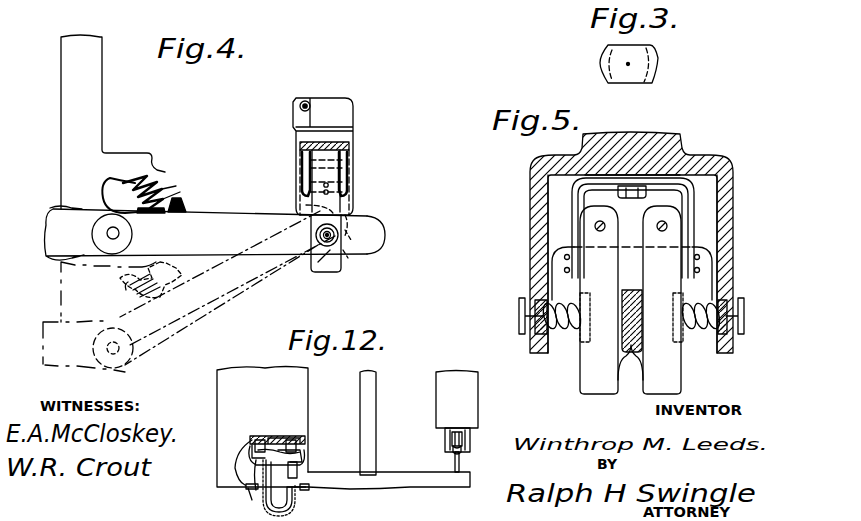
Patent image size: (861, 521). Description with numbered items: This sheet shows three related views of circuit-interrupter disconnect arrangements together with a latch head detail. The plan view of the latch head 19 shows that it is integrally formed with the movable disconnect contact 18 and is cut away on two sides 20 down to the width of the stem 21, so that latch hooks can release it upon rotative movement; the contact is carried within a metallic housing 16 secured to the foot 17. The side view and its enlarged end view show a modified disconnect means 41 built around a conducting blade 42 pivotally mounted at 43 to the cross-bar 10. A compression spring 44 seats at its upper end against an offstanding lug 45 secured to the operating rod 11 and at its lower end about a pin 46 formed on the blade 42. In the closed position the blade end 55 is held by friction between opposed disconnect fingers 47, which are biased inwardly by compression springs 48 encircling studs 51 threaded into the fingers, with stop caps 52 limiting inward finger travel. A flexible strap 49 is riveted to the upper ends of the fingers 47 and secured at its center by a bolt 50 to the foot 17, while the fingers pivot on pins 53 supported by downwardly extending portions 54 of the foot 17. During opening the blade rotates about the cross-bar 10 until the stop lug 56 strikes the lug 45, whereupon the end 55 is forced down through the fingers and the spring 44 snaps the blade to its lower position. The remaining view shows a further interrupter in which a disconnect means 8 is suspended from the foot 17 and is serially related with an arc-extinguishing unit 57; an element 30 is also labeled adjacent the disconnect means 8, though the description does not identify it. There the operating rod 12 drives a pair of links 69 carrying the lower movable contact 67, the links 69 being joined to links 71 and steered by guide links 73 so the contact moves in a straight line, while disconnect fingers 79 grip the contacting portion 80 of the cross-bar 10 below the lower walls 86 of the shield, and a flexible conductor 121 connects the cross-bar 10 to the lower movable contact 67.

In FIG. 12, the disconnect means 8 is at (467, 400).
In FIG. 4, the cross-bar 10 is at (52, 214).
In FIG. 12, the cross-bar 10 is at (345, 489).
In FIG. 4, the operating rod 11 is at (103, 86).
In FIG. 12, the operating rod 11 is at (376, 425).
In FIG. 12, the operating rod 12 is at (294, 440).
In FIG. 12, the metallic housing 16 is at (436, 422).
In FIG. 5, the foot 17 is at (682, 145).
In FIG. 3, the movable disconnect contact 18 is at (610, 64).
In FIG. 12, the movable disconnect contact 18 is at (452, 464).
In FIG. 3, the latch head 19 is at (659, 68).
In FIG. 12, the latch head 19 is at (446, 447).
In FIG. 3, the cut-away sides 20 is at (648, 45).
In FIG. 3, the stem 21 is at (641, 86).
In FIG. 12, the contact holder 30 is at (470, 440).
In FIG. 4, the disconnect means 41 is at (340, 156).
In FIG. 5, the disconnect means 41 is at (604, 273).
In FIG. 4, the conducting blade 42 is at (240, 216).
In FIG. 4, the pivot 43 is at (119, 233).
In FIG. 4, the compression spring 44 is at (158, 186).
In FIG. 4, the offstanding lug 45 is at (150, 150).
In FIG. 4, the pin 46 is at (180, 186).
In FIG. 4, the disconnect fingers 47 is at (325, 270).
In FIG. 5, the disconnect fingers 47 is at (580, 368).
In FIG. 4, the compression springs 48 is at (315, 244).
In FIG. 5, the compression springs 48 is at (563, 340).
In FIG. 4, the flexible strap 49 is at (312, 193).
In FIG. 5, the flexible strap 49 is at (690, 198).
In FIG. 5, the bolt 50 is at (630, 198).
In FIG. 4, the studs 51 is at (316, 236).
In FIG. 5, the studs 51 is at (540, 335).
In FIG. 5, the stop caps 52 is at (519, 310).
In FIG. 4, the pins 53 is at (353, 200).
In FIG. 5, the pins 53 is at (600, 231).
In FIG. 4, the downwardly extending portions 54 is at (300, 168).
In FIG. 5, the downwardly extending portions 54 is at (707, 219).
In FIG. 4, the blade end 55 is at (352, 256).
In FIG. 5, the blade end 55 is at (640, 322).
In FIG. 4, the stop lug 56 is at (186, 201).
In FIG. 4, the arc-extinguishing unit 57 is at (184, 400).
In FIG. 12, the lower movable contact 67 is at (262, 440).
In FIG. 12, the links 69 is at (305, 458).
In FIG. 12, the links 71 is at (305, 445).
In FIG. 12, the guide links 73 is at (240, 490).
In FIG. 12, the disconnect fingers 79 is at (297, 472).
In FIG. 12, the contacting portion 80 is at (279, 488).
In FIG. 12, the lower walls 86 is at (256, 492).
In FIG. 12, the flexible conductor 121 is at (295, 512).